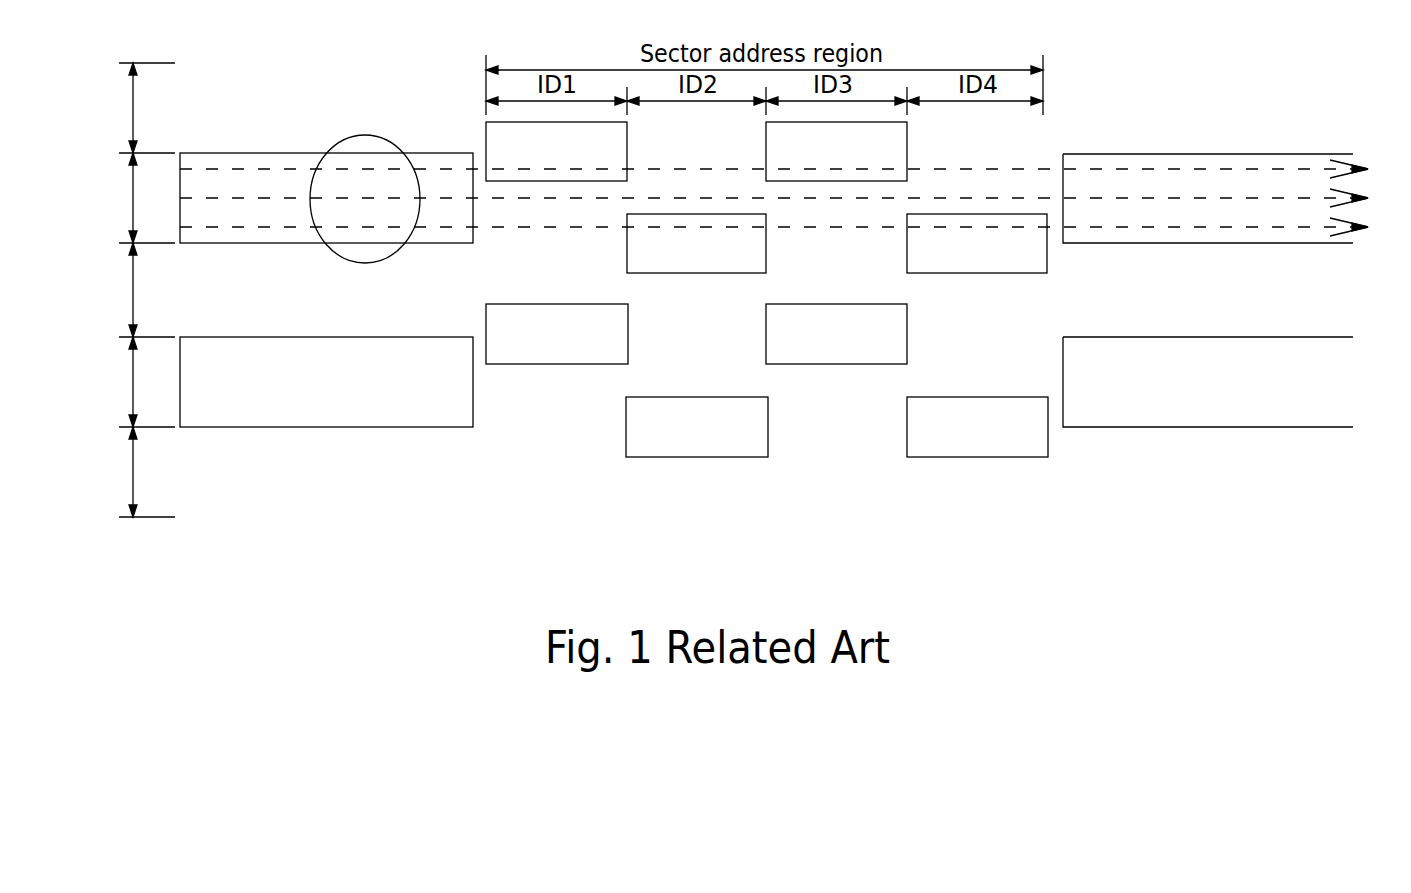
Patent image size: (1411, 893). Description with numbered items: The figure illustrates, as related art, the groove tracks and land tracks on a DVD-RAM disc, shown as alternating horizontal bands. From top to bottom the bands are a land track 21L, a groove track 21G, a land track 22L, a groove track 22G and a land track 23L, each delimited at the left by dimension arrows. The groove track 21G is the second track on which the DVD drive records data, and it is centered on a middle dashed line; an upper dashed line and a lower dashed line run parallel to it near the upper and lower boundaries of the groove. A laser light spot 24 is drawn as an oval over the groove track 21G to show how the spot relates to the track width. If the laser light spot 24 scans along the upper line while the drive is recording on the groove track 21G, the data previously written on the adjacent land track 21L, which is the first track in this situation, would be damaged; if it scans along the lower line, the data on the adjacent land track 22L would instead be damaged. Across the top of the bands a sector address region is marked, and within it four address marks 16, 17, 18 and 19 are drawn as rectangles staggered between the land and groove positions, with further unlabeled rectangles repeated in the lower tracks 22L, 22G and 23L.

The ID1 address mark 16 is at (628, 147).
The ID2 address mark 17 is at (767, 250).
The ID3 address mark 18 is at (908, 148).
The ID4 address mark 19 is at (1048, 263).
The laser light spot 24 is at (386, 136).
The land track 21L is at (661, 108).
The groove track 21G is at (730, 198).
The land track 22L is at (661, 290).
The groove sector 22G is at (707, 382).
The land sector 23L is at (661, 472).